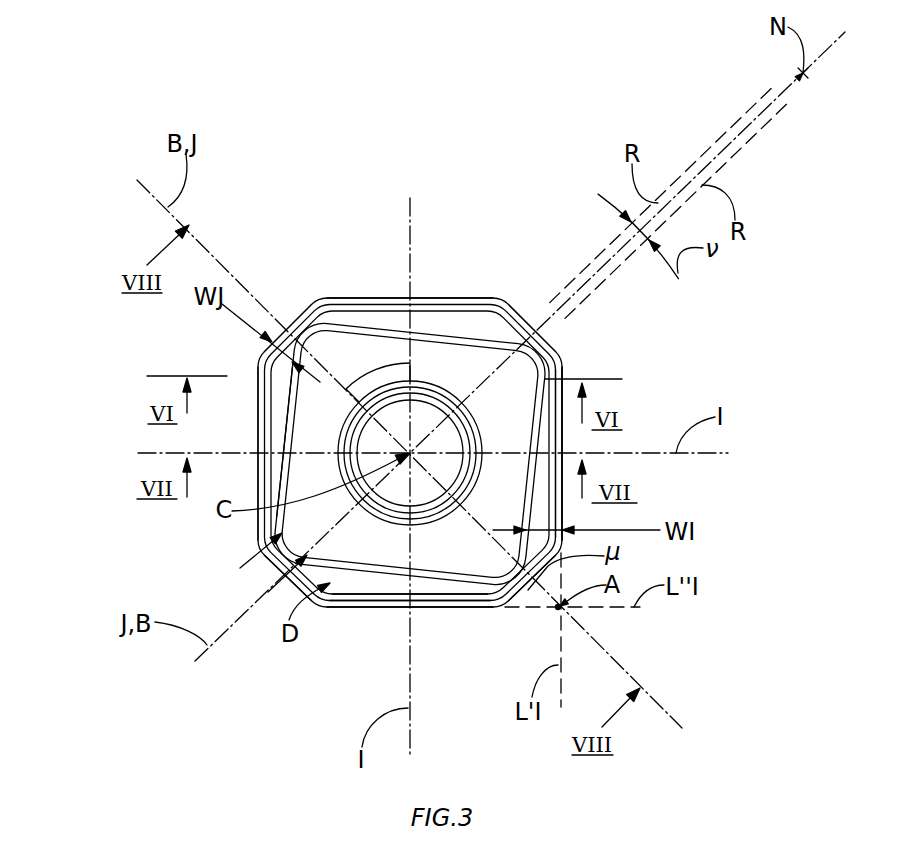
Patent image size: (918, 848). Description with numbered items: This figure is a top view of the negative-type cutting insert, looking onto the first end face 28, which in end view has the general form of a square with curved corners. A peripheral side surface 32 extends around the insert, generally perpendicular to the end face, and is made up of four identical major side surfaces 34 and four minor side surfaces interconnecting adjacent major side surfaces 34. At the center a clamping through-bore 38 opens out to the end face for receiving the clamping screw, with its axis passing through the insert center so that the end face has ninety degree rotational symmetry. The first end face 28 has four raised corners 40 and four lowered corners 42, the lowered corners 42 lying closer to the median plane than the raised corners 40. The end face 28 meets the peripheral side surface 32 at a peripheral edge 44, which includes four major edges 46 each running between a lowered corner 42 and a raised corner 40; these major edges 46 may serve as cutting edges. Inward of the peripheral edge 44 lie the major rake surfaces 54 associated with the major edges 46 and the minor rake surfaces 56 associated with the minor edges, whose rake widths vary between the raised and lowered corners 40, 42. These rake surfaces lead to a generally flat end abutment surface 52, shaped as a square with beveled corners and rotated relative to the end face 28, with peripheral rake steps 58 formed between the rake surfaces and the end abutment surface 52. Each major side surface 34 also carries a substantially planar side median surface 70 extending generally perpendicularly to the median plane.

The first end face 28 is at (389, 330).
The peripheral side surface 32 is at (447, 285).
The major side surface 34 is at (566, 511).
The clamping through-bore 38 is at (410, 526).
The raised corner 40 is at (506, 303).
The lowered corner 42 is at (311, 302).
The peripheral edge 44 is at (444, 613).
The major edge 46 is at (463, 612).
The end abutment surface 52 is at (374, 330).
The major rake surface 54 is at (467, 310).
The minor rake surface 56 is at (297, 312).
The peripheral rake step 58 is at (291, 397).
The side median surface 70 is at (566, 502).